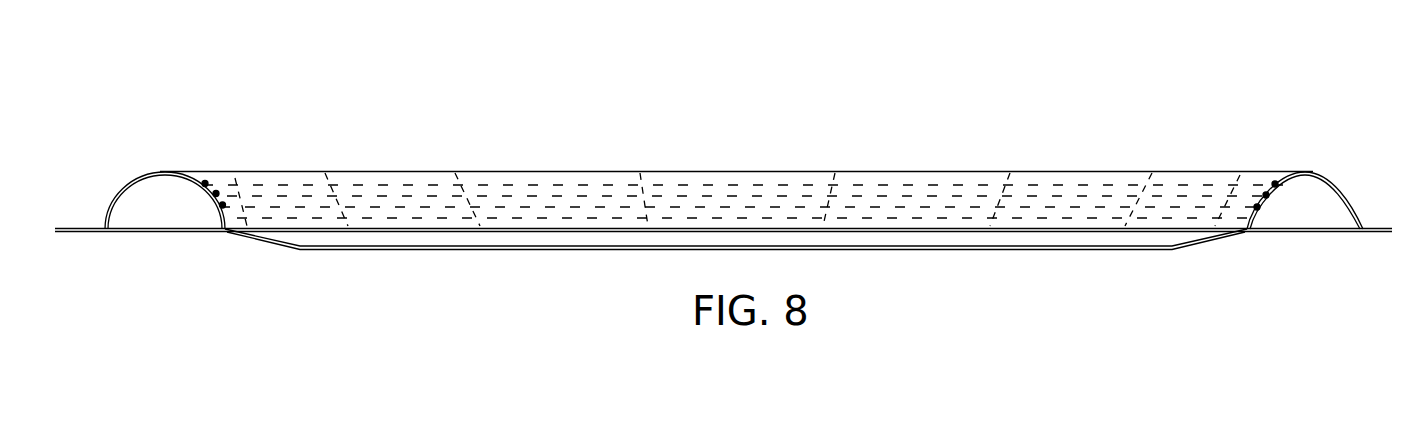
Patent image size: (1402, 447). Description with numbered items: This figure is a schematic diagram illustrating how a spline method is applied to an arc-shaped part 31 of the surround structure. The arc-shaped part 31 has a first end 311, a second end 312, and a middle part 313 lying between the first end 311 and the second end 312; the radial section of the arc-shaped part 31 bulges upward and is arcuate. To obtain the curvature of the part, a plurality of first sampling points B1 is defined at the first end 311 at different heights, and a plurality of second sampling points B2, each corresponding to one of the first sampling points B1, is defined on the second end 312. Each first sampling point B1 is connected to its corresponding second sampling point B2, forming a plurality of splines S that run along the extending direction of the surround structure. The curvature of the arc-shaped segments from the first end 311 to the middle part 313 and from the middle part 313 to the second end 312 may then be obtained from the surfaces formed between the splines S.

The arc-shaped part 31 is at (73, 166).
The first end 311 is at (130, 182).
The second end 312 is at (1345, 188).
The middle part 313 is at (735, 190).
The splines S is at (357, 183).
The first sampling points B1 is at (224, 204).
The second sampling points B2 is at (1257, 206).